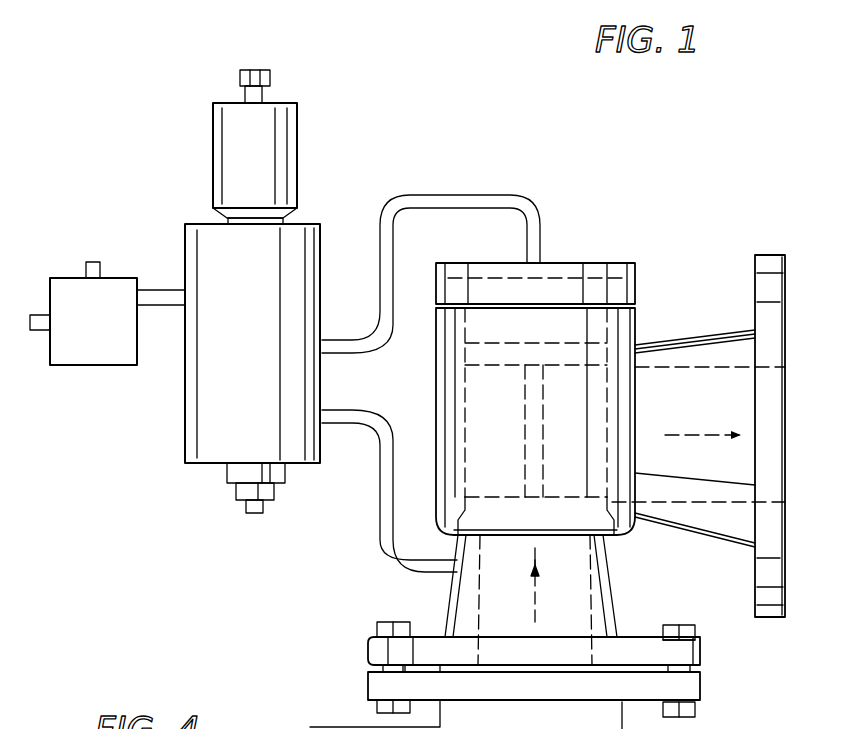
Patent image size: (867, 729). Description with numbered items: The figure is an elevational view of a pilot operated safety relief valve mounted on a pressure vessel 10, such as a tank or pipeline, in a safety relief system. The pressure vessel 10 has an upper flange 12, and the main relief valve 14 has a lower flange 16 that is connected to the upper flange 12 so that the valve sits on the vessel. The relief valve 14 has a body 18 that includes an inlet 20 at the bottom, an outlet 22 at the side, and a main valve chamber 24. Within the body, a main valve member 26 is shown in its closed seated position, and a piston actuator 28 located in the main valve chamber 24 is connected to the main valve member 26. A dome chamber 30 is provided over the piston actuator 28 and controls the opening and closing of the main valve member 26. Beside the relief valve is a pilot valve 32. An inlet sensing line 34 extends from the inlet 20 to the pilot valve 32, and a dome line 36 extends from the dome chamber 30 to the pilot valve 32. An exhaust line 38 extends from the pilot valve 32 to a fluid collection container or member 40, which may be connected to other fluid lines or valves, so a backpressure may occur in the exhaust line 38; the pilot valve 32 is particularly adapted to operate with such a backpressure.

The pressure vessel 10 is at (724, 727).
The upper flange 12 is at (700, 690).
The main relief valve 14 is at (585, 409).
The lower flange 16 is at (640, 648).
The body 18 is at (600, 400).
The inlet 20 is at (515, 620).
The outlet 22 is at (745, 405).
The main valve chamber 24 is at (472, 458).
The main valve member 26 is at (487, 515).
The piston actuator 28 is at (470, 352).
The dome chamber 30 is at (567, 287).
The pilot valve 32 is at (312, 221).
The inlet sensing line 34 is at (368, 425).
The dome line 36 is at (440, 196).
The exhaust line 38 is at (160, 290).
The fluid collection container 40 is at (88, 353).